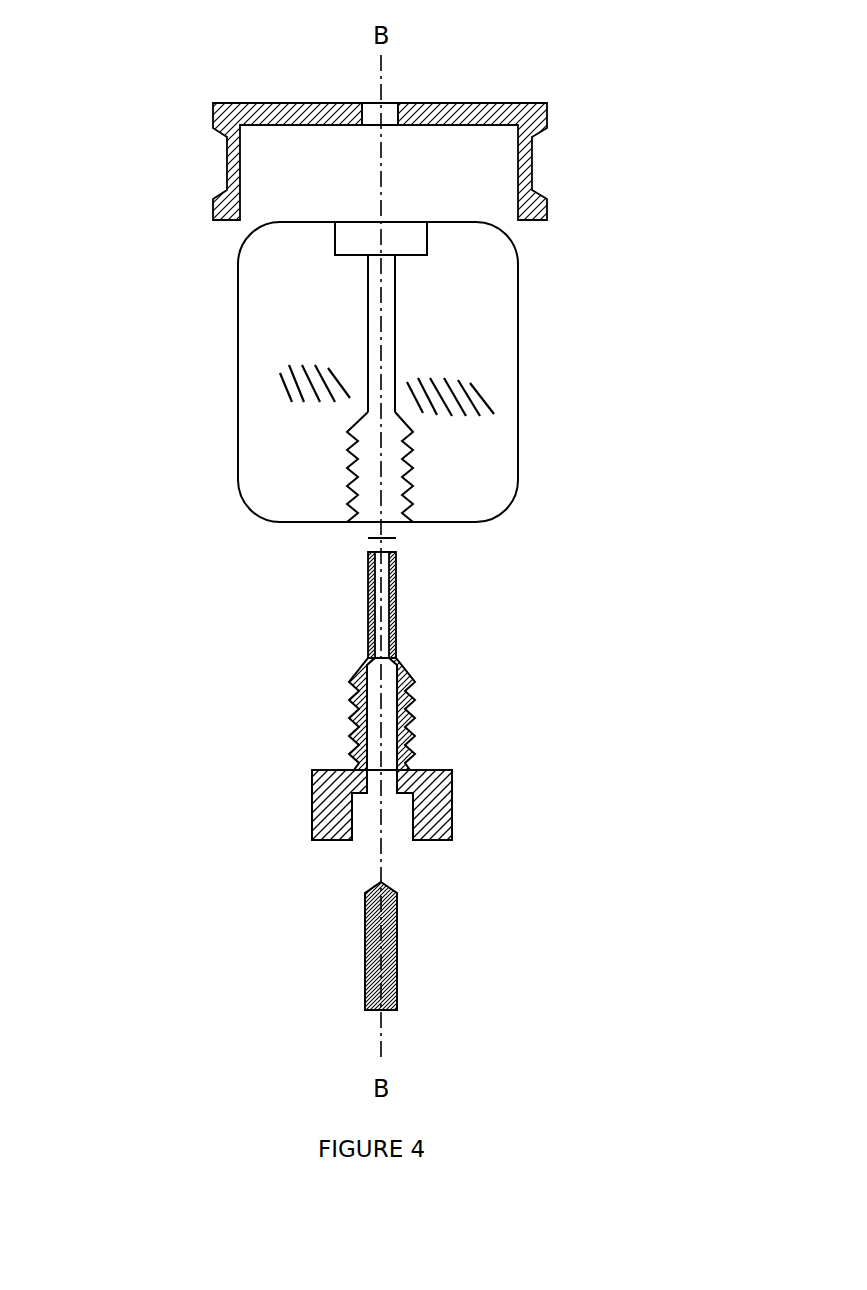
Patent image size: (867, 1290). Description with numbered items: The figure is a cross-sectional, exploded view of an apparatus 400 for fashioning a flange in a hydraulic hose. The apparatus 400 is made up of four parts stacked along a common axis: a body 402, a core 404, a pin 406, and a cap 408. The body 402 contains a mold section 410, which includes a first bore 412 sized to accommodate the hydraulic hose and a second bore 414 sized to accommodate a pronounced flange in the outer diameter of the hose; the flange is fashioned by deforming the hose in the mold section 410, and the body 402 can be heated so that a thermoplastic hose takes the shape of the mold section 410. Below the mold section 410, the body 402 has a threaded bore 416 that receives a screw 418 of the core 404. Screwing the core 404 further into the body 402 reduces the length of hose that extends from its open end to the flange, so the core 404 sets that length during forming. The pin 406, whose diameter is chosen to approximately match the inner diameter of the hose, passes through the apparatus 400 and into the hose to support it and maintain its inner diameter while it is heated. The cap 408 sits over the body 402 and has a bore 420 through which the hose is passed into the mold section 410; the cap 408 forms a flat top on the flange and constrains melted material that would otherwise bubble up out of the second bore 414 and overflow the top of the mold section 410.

The apparatus 400 is at (127, 62).
The body 402 is at (630, 222).
The core 404 is at (625, 548).
The pin 406 is at (625, 885).
The cap 408 is at (627, 92).
The mold section 410 is at (523, 228).
The first bore 412 is at (367, 312).
The second bore 414 is at (340, 242).
The threaded bore 416 is at (363, 481).
The screw 418 is at (415, 728).
The bore 420 is at (369, 93).